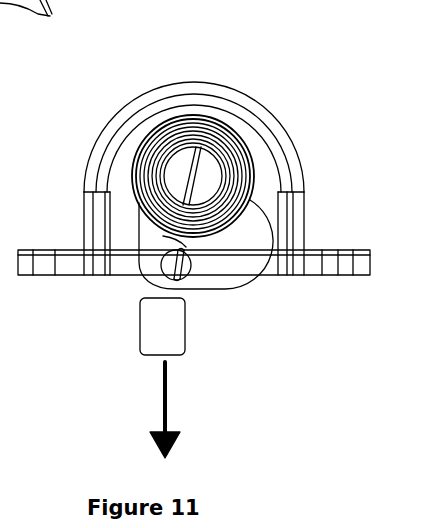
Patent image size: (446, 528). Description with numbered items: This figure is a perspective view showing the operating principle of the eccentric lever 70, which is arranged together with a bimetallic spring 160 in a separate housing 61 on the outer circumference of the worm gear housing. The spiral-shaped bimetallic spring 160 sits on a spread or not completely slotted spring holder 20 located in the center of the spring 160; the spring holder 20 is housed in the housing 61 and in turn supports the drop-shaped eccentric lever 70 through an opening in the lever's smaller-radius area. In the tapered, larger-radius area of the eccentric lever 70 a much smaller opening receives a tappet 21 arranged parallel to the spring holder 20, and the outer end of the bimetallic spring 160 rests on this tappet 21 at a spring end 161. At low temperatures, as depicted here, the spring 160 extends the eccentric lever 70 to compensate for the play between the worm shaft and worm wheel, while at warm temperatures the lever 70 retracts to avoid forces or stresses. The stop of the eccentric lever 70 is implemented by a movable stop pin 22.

The bimetallic spring 160 is at (178, 125).
The housing 61 is at (110, 158).
The spring holder 20 is at (207, 172).
The eccentric lever 70 is at (247, 233).
The spring end loop 161 is at (153, 280).
The tappet 21 is at (193, 268).
The stop pin 22 is at (178, 327).